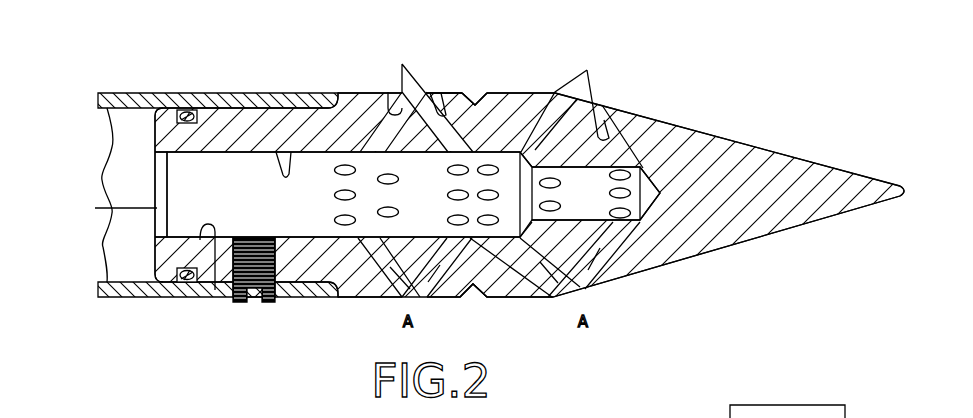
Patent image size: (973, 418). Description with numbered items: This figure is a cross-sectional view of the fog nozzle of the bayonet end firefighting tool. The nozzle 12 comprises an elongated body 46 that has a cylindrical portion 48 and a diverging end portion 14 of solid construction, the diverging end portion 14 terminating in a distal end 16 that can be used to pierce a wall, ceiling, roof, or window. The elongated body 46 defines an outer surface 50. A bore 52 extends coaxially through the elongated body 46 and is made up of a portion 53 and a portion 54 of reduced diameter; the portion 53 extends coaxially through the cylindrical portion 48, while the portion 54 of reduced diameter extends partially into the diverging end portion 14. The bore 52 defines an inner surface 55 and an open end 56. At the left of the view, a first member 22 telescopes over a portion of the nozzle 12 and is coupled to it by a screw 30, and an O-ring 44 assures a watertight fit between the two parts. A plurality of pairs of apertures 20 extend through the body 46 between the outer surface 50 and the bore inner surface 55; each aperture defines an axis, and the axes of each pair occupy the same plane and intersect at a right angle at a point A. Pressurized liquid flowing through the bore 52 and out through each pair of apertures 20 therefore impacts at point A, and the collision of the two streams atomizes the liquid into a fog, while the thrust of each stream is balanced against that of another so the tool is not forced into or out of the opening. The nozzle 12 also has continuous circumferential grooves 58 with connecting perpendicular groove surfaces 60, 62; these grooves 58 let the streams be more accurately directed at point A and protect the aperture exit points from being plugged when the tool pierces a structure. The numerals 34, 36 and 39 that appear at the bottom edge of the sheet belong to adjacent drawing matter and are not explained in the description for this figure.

In FIG. 2, the nozzle 12 is at (747, 111).
In FIG. 2, the diverging end portion 14 is at (751, 244).
In FIG. 2, the distal end 16 is at (907, 192).
In FIG. 2, the apertures 20 is at (500, 167).
In FIG. 2, the first member 22 is at (152, 299).
In FIG. 2, the screw 30 is at (268, 303).
In FIG. 2, the O-ring 44 is at (189, 283).
In FIG. 2, the elongated body 46 is at (341, 87).
In FIG. 2, the cylindrical portion 48 is at (373, 298).
In FIG. 2, the outer surface 50 is at (444, 294).
In FIG. 2, the bore 52 is at (215, 282).
In FIG. 2, the portion 53 is at (282, 172).
In FIG. 2, the portion of reduced diameter 54 is at (607, 167).
In FIG. 2, the inner surface 55 is at (242, 162).
In FIG. 2, the open end 56 is at (112, 208).
In FIG. 2, the continuous circumferential grooves 58 is at (475, 93).
In FIG. 2, the groove surface 60 is at (467, 92).
In FIG. 2, the groove surface 62 is at (488, 92).
In FIG. 3, the member 34 is at (910, 417).
In FIG. 3, the member 36 is at (636, 417).
In FIG. 3, the member 39 is at (175, 417).